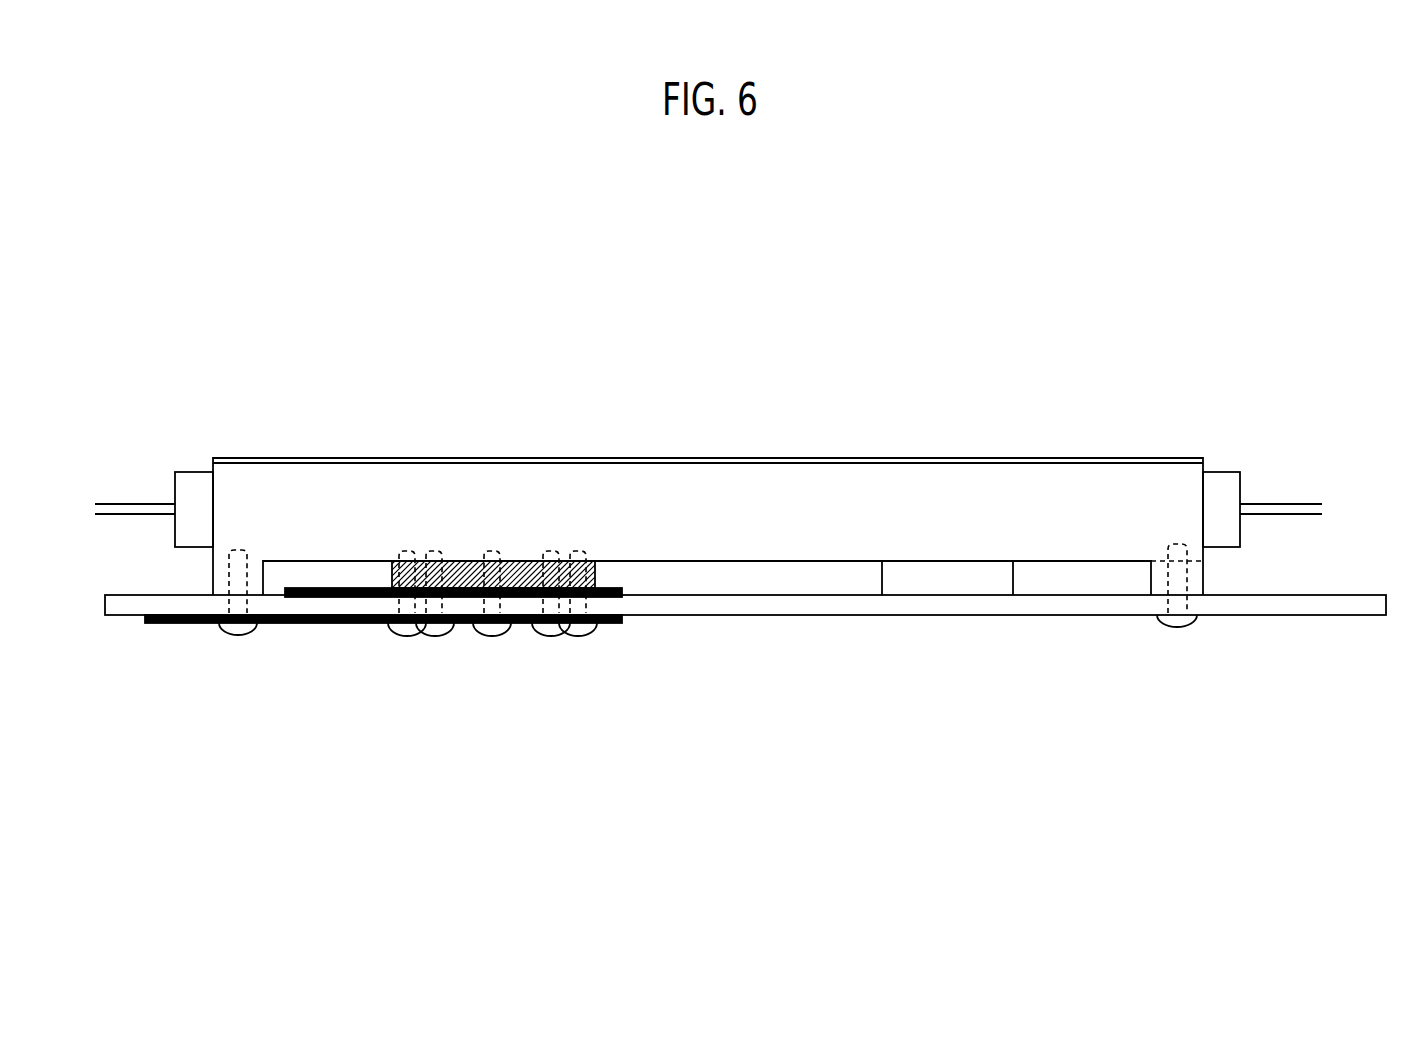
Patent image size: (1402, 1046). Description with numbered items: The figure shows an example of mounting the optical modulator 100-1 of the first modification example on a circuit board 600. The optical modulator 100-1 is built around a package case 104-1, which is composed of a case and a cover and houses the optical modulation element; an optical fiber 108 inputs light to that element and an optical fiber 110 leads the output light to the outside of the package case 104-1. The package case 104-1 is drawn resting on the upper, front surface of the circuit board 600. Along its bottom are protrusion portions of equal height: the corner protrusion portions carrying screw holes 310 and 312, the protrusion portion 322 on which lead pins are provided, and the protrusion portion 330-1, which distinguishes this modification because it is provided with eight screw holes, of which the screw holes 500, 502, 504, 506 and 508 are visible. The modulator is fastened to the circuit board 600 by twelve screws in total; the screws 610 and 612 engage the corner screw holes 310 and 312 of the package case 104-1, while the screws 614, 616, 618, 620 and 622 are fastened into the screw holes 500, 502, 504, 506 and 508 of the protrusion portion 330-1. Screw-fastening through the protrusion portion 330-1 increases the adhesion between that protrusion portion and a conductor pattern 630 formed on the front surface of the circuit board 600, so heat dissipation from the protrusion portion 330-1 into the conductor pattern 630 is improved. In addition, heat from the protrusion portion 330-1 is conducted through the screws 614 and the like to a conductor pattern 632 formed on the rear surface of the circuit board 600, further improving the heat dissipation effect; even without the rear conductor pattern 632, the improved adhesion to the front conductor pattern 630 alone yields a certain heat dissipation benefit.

The optical modulator 100-1 is at (1066, 449).
The package case 104-1 is at (887, 463).
The optical fiber 108 is at (1279, 506).
The optical fiber 110 is at (135, 508).
The screw hole 310 is at (230, 580).
The screw hole 312 is at (1184, 581).
The protrusion portion 322 is at (917, 583).
The protrusion portion 330-1 is at (524, 572).
The screw hole 500 is at (405, 551).
The screw hole 502 is at (433, 551).
The screw hole 504 is at (492, 551).
The screw hole 506 is at (551, 551).
The screw hole 508 is at (578, 551).
The circuit board 600 is at (132, 607).
The screw 610 is at (238, 633).
The screw 612 is at (1175, 626).
The screw 614 is at (405, 635).
The screw 616 is at (435, 635).
The screw 618 is at (488, 635).
The screw 620 is at (547, 635).
The screw 622 is at (582, 635).
The conductor pattern 630 is at (622, 592).
The conductor pattern 632 is at (622, 620).